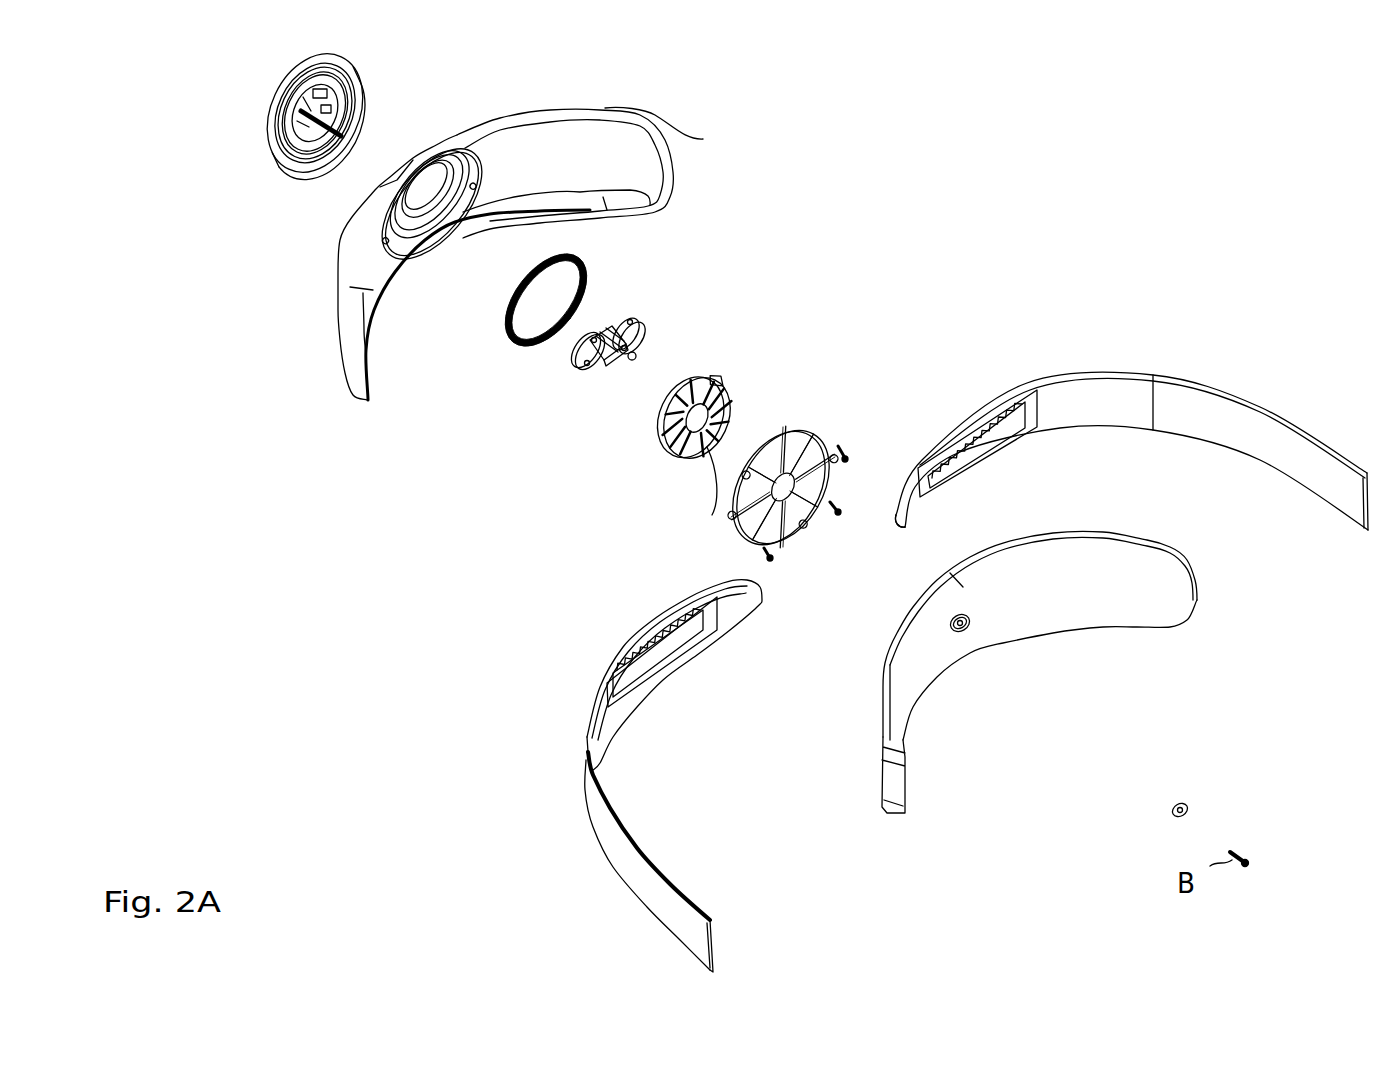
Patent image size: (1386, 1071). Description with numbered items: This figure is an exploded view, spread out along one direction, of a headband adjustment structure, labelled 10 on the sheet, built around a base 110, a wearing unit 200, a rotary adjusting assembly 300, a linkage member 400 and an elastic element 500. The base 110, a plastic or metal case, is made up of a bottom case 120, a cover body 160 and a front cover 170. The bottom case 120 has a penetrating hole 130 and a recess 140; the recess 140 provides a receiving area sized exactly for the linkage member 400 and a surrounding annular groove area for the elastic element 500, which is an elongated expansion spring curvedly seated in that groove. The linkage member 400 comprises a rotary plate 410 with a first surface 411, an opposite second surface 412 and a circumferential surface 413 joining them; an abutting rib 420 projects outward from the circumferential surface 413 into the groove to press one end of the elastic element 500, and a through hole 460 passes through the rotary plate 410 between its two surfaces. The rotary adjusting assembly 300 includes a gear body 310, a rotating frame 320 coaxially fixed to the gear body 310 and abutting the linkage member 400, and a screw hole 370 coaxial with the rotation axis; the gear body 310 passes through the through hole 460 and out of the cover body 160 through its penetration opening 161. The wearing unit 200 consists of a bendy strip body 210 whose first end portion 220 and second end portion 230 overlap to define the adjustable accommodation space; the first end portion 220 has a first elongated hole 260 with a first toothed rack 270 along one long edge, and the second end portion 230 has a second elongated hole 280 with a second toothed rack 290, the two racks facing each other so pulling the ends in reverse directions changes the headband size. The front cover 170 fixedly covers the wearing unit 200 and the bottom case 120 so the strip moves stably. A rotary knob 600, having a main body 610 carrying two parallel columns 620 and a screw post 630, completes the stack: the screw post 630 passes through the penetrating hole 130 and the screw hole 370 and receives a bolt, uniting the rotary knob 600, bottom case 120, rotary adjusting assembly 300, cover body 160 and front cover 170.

The head-mounted display device 10 is at (1213, 85).
The rotary knob 600 is at (241, 117).
The main body 610 is at (303, 89).
The columns 620 is at (287, 114).
The screw post 630 is at (274, 162).
The base 110 is at (577, 208).
The bottom case 120 is at (678, 132).
The penetrating hole 130 is at (440, 195).
The recess 140 is at (477, 180).
The elastic element 500 is at (518, 334).
The rotary adjusting assembly 300 is at (680, 318).
The gear body 310 is at (630, 352).
The rotating frame 320 is at (629, 322).
The screw hole 370 is at (634, 360).
The linkage member 400 is at (592, 448).
The rotary plate 410 is at (623, 448).
The first surface 411 is at (690, 440).
The second surface 412 is at (705, 458).
The circumferential surface 413 is at (698, 436).
The abutting rib 420 is at (623, 448).
The through hole 460 is at (712, 515).
The cover body 160 is at (760, 509).
The penetration opening 161 is at (790, 500).
The wearing unit 200 is at (1131, 418).
The second elongated hole 280 is at (981, 420).
The second toothed rack 290 is at (942, 452).
The second end portion 230 is at (898, 515).
The first end portion 220 is at (702, 675).
The first elongated hole 260 is at (686, 636).
The first toothed rack 270 is at (651, 656).
The strip body 210 is at (618, 860).
The front cover 170 is at (1138, 612).